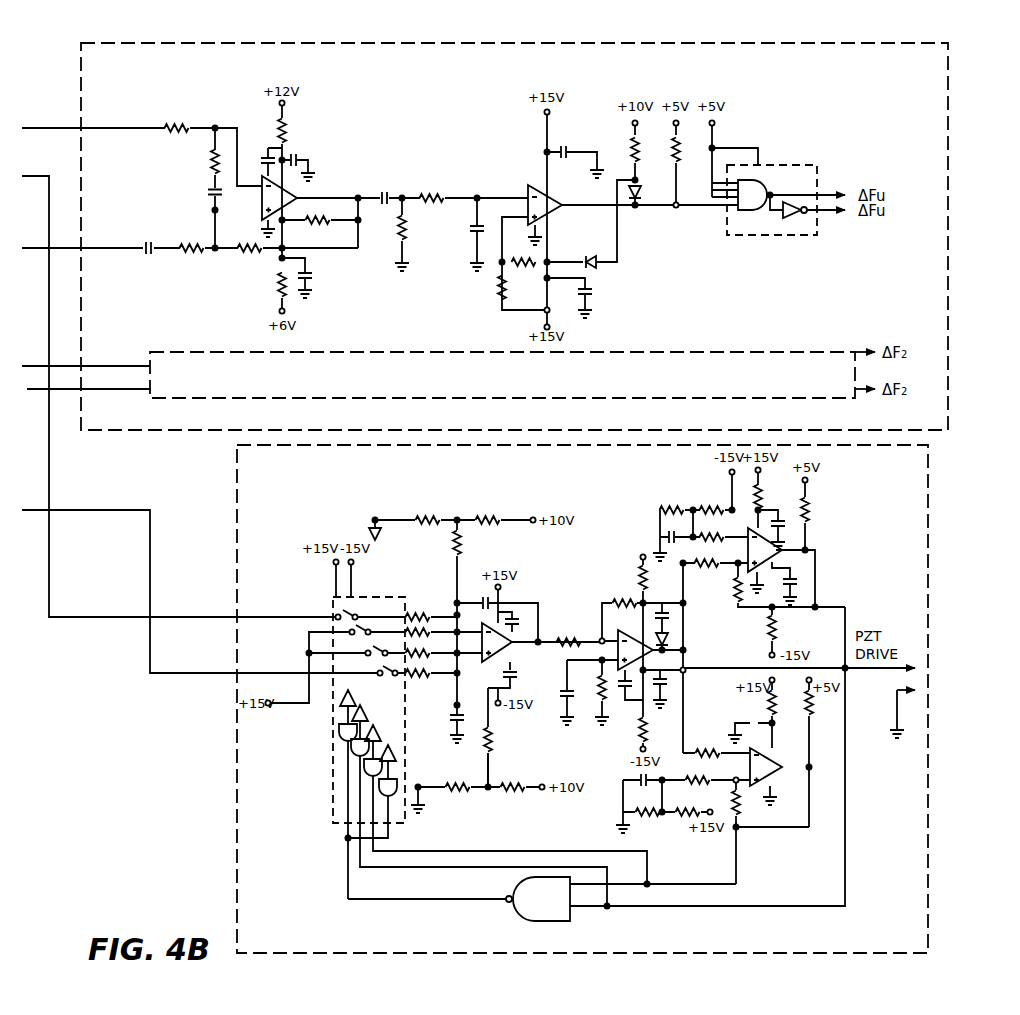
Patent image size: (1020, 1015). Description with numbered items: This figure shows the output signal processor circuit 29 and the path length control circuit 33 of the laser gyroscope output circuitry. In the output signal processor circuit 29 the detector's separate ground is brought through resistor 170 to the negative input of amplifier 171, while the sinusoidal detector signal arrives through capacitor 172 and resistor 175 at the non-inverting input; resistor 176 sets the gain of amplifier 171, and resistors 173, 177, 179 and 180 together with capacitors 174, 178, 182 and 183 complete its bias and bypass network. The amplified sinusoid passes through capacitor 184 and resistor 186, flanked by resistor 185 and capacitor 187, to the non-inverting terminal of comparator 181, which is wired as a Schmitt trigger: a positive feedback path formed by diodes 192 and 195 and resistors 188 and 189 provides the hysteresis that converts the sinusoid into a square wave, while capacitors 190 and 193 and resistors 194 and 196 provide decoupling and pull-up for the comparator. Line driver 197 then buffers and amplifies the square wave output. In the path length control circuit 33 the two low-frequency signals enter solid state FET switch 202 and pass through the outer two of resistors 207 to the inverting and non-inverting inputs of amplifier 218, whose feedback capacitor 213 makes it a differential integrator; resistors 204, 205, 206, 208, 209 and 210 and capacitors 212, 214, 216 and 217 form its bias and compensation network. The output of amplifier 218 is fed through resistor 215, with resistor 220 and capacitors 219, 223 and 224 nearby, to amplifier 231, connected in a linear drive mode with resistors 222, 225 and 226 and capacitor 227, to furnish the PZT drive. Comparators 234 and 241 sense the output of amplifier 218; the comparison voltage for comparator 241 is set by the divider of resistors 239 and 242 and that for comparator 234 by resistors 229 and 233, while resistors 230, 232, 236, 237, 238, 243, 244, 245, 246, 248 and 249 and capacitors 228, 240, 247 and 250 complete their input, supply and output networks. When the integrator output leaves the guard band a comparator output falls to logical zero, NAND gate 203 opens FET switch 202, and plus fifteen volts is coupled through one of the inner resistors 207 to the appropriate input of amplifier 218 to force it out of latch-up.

The output signal processor circuit 29 is at (437, 45).
The path length control circuit 33 is at (582, 715).
The resistor 170 is at (178, 118).
The amplifier 171 is at (290, 191).
The capacitor 172 is at (145, 254).
The resistor 173 is at (210, 163).
The capacitor 174 is at (208, 200).
The resistor 175 is at (193, 258).
The resistor 176 is at (248, 257).
The resistor 177 is at (278, 285).
The capacitor 178 is at (312, 286).
The resistor 179 is at (312, 224).
The resistor 180 is at (287, 140).
The comparator 181 is at (533, 185).
The capacitor 182 is at (305, 155).
The capacitor 183 is at (262, 152).
The capacitor 184 is at (384, 190).
The resistor 185 is at (410, 230).
The resistor 186 is at (436, 190).
The capacitor 187 is at (472, 230).
The resistor 188 is at (500, 290).
The resistor 189 is at (525, 270).
The capacitor 190 is at (590, 290).
The diode 192 is at (594, 255).
The capacitor 193 is at (565, 145).
The resistor 194 is at (628, 160).
The diode 195 is at (645, 190).
The resistor 196 is at (668, 160).
The line driver 197 is at (790, 165).
The solid state FET switch 202 is at (325, 805).
The NAND gate 203 is at (508, 920).
The resistor 204 is at (430, 515).
The resistor 205 is at (488, 515).
The resistor 206 is at (465, 548).
The resistors 207 is at (440, 650).
The resistor 208 is at (450, 790).
The resistor 209 is at (510, 790).
The resistor 210 is at (494, 760).
The capacitor 212 is at (490, 740).
The feedback capacitor 213 is at (482, 598).
The capacitor 214 is at (515, 625).
The resistor 215 is at (568, 638).
The capacitor 216 is at (457, 695).
The capacitor 217 is at (514, 682).
The capacitor 218 is at (512, 647).
The capacitor 219 is at (563, 712).
The resistor 220 is at (595, 690).
The resistor 222 is at (643, 730).
The capacitor 223 is at (620, 700).
The capacitor 224 is at (672, 680).
The resistor 225 is at (610, 600).
The resistor 226 is at (635, 580).
The capacitor 227 is at (670, 620).
The capacitor 228 is at (640, 776).
The resistor 229 is at (650, 816).
The resistor 230 is at (680, 820).
The amplifier 231 is at (638, 632).
The resistor 232 is at (697, 790).
The resistor 233 is at (716, 740).
The comparator 234 is at (780, 760).
The resistor 236 is at (765, 705).
The resistor 237 is at (815, 705).
The resistor 238 is at (740, 800).
The resistor 239 is at (676, 505).
The capacitor 240 is at (662, 530).
The comparator 241 is at (748, 545).
The resistor 242 is at (718, 490).
The resistor 243 is at (719, 527).
The resistor 244 is at (705, 573).
The resistor 245 is at (735, 592).
The resistor 246 is at (765, 632).
The capacitor 247 is at (800, 578).
The resistor 248 is at (810, 510).
The resistor 249 is at (762, 496).
The capacitor 250 is at (790, 512).